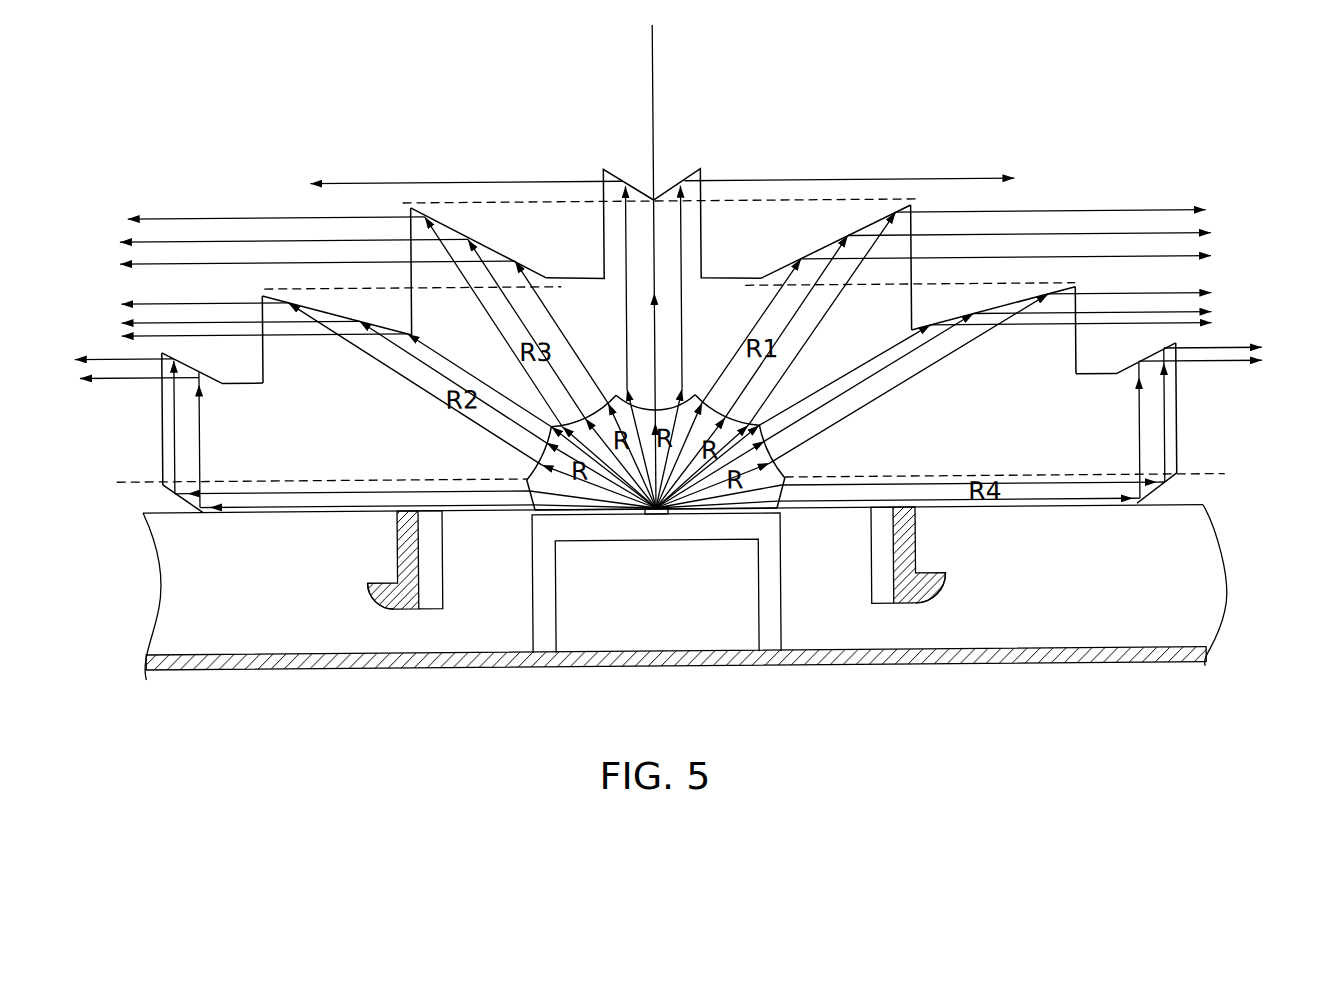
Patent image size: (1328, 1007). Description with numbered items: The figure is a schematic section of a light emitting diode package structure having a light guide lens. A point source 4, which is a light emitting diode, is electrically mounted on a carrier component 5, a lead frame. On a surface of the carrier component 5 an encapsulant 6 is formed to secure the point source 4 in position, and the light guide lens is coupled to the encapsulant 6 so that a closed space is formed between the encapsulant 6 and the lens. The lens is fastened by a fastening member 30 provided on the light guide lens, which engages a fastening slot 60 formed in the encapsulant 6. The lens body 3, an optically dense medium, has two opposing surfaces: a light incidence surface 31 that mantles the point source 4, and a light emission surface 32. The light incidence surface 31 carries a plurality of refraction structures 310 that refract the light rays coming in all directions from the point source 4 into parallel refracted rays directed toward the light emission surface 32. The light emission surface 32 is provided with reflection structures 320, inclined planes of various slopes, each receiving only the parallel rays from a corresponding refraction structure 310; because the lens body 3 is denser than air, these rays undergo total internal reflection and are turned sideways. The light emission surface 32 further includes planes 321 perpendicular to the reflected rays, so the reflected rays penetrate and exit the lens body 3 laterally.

The lens body 3 is at (680, 279).
The light incidence surface 31 is at (671, 405).
The light emission surface 32 is at (680, 287).
The refraction structures 310 is at (600, 510).
The reflection structures 320 is at (461, 230).
The planes 321 is at (413, 270).
The point source 4 is at (660, 516).
The carrier component 5 is at (720, 530).
The fastening member 30 is at (907, 585).
The fastening slot 60 is at (943, 578).
The encapsulant 6 is at (1113, 610).